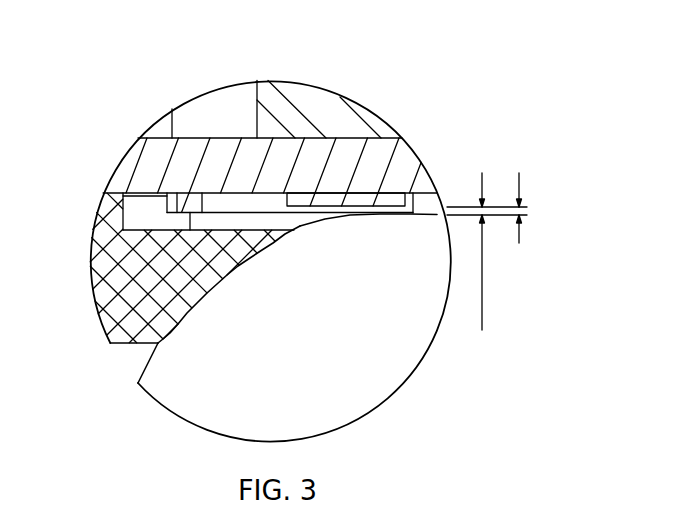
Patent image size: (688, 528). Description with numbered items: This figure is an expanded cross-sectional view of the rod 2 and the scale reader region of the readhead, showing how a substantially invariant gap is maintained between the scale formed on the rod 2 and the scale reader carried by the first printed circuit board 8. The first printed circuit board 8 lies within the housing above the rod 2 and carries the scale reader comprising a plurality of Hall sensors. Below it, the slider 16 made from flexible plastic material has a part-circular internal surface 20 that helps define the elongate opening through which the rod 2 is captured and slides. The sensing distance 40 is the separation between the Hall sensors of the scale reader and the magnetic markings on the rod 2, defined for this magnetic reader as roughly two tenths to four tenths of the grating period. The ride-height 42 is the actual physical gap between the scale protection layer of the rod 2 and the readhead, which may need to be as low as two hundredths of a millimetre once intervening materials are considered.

The rod 2 is at (193, 383).
The first printed circuit board 8 is at (192, 168).
The slider 16 is at (128, 263).
The internal surface 20 is at (173, 325).
The sensing distance 40 is at (522, 210).
The ride-height 42 is at (477, 213).